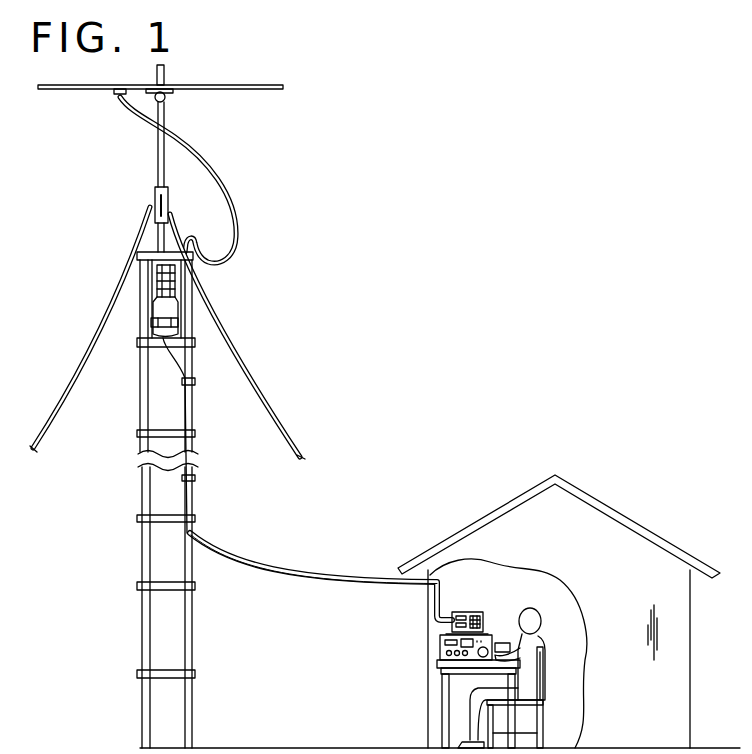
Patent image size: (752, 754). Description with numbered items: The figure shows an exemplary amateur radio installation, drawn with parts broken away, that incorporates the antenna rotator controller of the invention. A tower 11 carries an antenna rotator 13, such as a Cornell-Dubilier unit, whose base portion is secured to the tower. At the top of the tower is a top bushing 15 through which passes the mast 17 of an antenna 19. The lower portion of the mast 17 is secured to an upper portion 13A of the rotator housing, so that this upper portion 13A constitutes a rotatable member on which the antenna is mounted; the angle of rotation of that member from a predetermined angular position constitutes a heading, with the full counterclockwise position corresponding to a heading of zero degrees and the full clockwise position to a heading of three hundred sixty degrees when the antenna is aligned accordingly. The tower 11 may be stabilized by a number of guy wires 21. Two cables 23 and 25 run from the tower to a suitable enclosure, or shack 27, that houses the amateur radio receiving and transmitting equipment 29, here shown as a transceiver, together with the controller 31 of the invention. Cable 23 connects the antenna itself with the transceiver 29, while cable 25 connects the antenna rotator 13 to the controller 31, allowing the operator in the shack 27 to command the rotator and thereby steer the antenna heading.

The tower 11 is at (143, 630).
The antenna rotator 13 is at (176, 302).
The upper portion of the rotator housing 13A is at (157, 285).
The top bushing 15 is at (155, 203).
The mast 17 is at (165, 240).
The antenna 19 is at (87, 93).
The guy wires 21 is at (82, 358).
The cable 23 is at (203, 150).
The cable 25 is at (163, 365).
The enclosure (shack) 27 is at (665, 540).
The amateur radio receiving and transmitting equipment 29 is at (500, 635).
The controller 31 is at (467, 583).